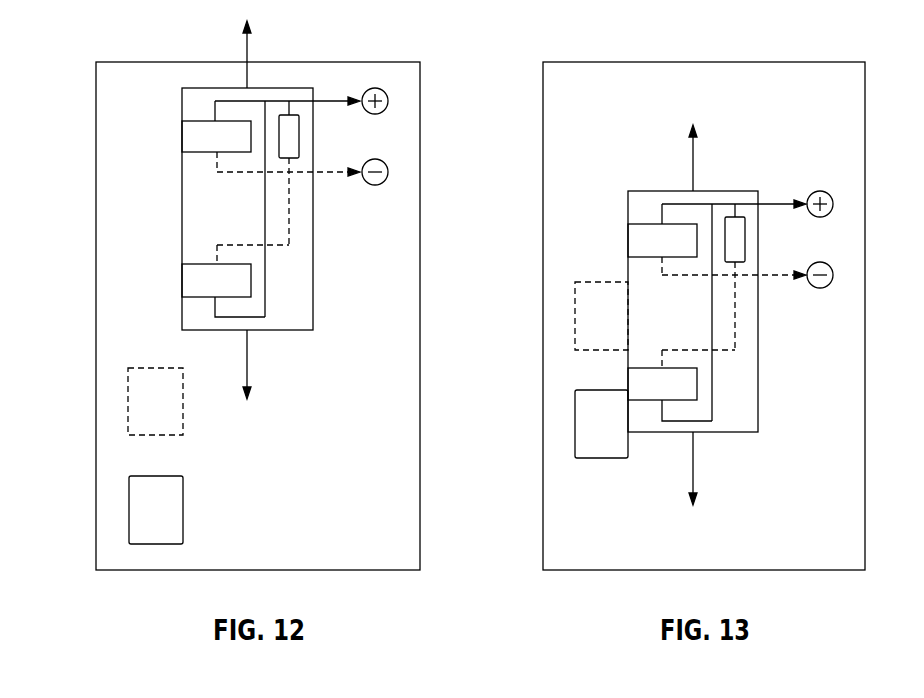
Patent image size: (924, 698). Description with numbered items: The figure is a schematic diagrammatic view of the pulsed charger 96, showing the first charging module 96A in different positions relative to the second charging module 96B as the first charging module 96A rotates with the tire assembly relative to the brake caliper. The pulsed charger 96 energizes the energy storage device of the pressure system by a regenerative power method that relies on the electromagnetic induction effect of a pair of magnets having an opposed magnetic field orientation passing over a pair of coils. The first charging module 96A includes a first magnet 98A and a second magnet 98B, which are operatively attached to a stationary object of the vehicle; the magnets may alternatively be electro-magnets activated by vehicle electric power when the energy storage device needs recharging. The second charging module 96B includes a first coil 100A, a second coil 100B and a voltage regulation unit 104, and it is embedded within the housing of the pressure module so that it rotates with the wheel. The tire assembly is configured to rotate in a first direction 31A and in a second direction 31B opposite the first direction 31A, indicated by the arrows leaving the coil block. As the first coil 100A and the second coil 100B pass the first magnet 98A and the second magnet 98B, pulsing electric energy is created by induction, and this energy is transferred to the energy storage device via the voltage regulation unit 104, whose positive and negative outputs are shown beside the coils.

In FIG. 12, the pulsed charger 96 is at (150, 62).
In FIG. 13, the pulsed charger 96 is at (596, 62).
In FIG. 12, the first charging module 96A is at (119, 462).
In FIG. 13, the first charging module 96A is at (561, 368).
In FIG. 12, the second charging module 96B is at (118, 210).
In FIG. 13, the second charging module 96B is at (554, 201).
In FIG. 12, the first direction 31A is at (249, 52).
In FIG. 13, the first direction 31A is at (695, 158).
In FIG. 12, the second direction 31B is at (249, 375).
In FIG. 13, the second direction 31B is at (695, 478).
In FIG. 12, the first coil 100A is at (246, 285).
In FIG. 13, the first coil 100A is at (713, 382).
In FIG. 12, the second coil 100B is at (190, 147).
In FIG. 13, the second coil 100B is at (637, 233).
In FIG. 12, the voltage regulation unit 104 is at (299, 150).
In FIG. 13, the voltage regulation unit 104 is at (745, 253).
In FIG. 12, the first magnet 98A is at (180, 424).
In FIG. 13, the first magnet 98A is at (575, 290).
In FIG. 12, the second magnet 98B is at (178, 523).
In FIG. 13, the second magnet 98B is at (578, 440).